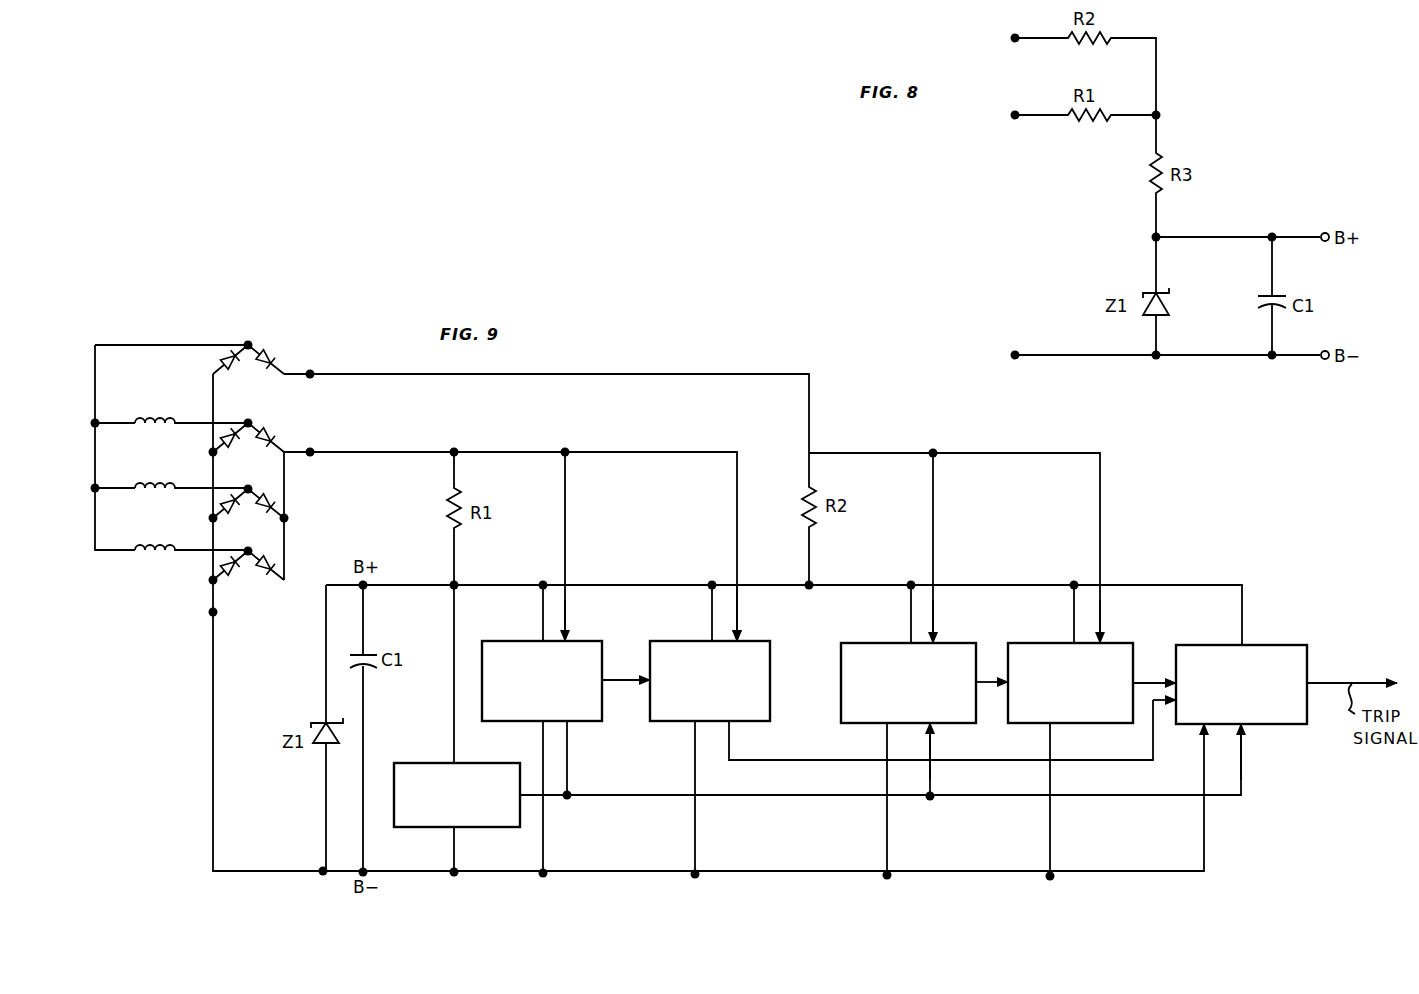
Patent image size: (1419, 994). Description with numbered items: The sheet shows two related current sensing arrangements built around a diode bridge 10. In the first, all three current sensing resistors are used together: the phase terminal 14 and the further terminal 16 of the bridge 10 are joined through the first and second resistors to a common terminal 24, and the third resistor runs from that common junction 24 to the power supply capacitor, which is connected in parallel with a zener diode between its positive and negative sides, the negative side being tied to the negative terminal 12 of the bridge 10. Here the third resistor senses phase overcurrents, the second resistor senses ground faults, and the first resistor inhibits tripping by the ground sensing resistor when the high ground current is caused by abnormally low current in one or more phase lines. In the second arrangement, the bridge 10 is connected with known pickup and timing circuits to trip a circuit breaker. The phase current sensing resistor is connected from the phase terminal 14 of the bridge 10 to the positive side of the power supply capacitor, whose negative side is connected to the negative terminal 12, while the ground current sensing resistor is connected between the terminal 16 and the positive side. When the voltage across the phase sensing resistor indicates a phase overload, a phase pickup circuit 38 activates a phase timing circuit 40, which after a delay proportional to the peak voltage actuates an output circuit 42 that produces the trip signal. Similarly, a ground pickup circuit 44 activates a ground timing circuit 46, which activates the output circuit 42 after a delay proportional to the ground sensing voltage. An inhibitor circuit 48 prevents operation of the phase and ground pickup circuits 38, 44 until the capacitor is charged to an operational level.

In FIG. 9, the bridge 10 is at (276, 657).
In FIG. 8, the common line or terminal 12 is at (1015, 344).
In FIG. 9, the common line or terminal 12 is at (707, 737).
In FIG. 8, the common line or terminal 14 is at (1015, 104).
In FIG. 9, the common line or terminal 14 is at (510, 533).
In FIG. 8, the line or terminal 16 is at (1015, 27).
In FIG. 9, the line or terminal 16 is at (546, 400).
In FIG. 8, the common terminal 24 is at (1169, 117).
In FIG. 9, the phase pickup circuit 38 is at (578, 641).
In FIG. 9, the phase timing circuit 40 is at (748, 641).
In FIG. 9, the output circuit 42 is at (1276, 645).
In FIG. 9, the ground pickup circuit 44 is at (950, 643).
In FIG. 9, the ground timing circuit 46 is at (1110, 643).
In FIG. 9, the inhibitor circuit 48 is at (484, 763).